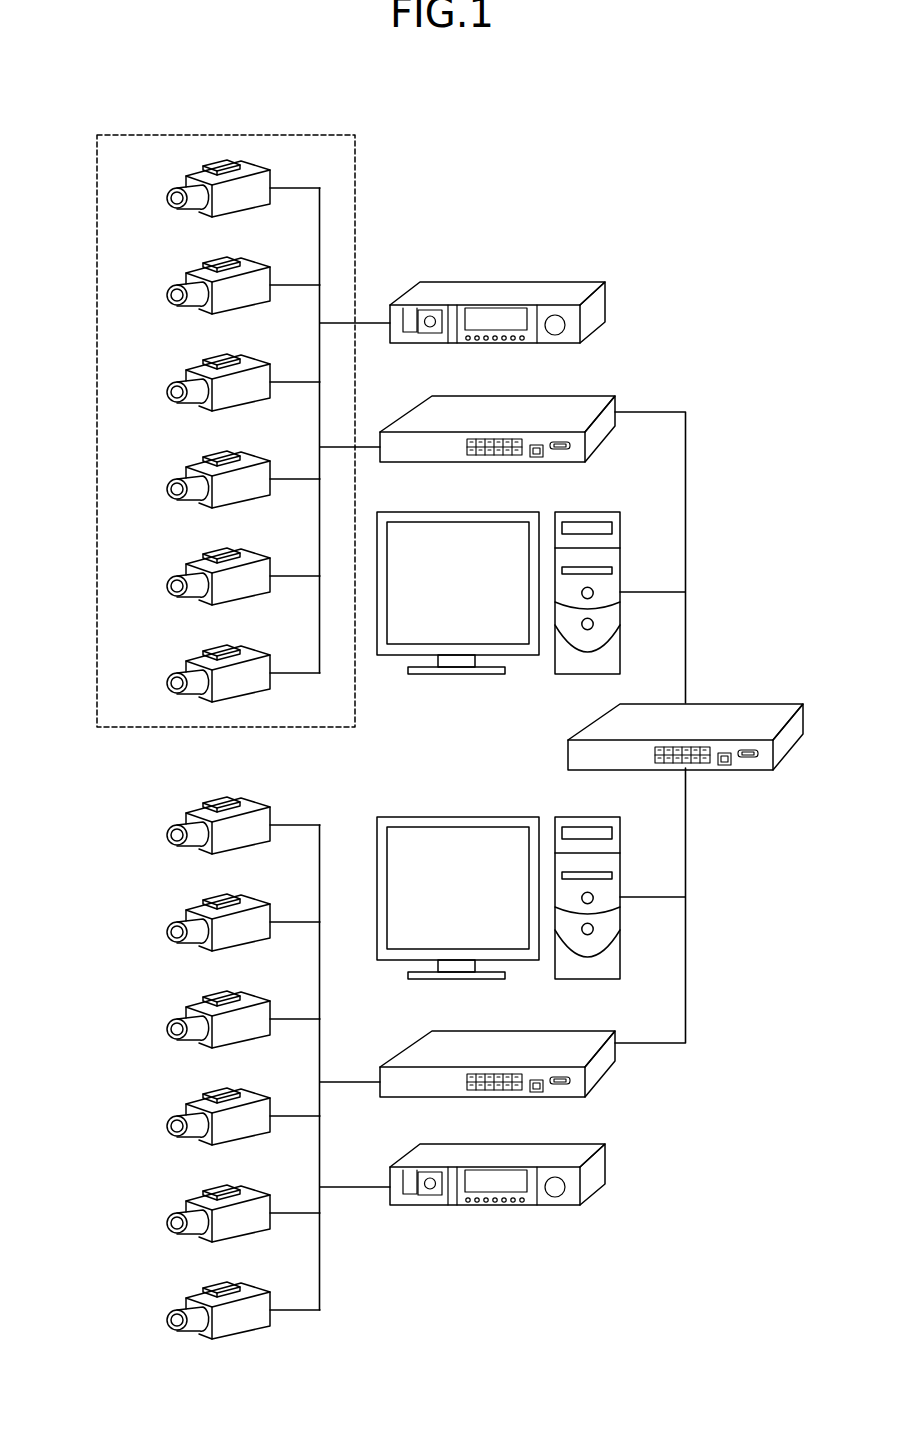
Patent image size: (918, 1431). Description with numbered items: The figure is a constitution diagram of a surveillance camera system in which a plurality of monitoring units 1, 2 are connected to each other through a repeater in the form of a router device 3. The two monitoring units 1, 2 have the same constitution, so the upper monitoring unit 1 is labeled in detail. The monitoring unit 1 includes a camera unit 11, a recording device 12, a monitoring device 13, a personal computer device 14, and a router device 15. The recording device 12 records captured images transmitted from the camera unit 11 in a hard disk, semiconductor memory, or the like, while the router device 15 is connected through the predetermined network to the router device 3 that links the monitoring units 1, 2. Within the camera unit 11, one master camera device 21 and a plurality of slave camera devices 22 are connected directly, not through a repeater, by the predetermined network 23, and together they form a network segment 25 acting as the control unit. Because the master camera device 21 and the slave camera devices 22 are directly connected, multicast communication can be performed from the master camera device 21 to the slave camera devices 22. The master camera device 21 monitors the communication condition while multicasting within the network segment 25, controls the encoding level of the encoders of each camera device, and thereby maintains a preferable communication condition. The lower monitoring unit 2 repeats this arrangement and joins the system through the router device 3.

The monitoring unit 1 is at (530, 228).
The monitoring unit 2 is at (663, 1126).
The router device 3 is at (750, 703).
The camera unit 11 is at (288, 119).
The recording device 12 is at (558, 270).
The monitoring device 13 is at (485, 511).
The personal computer device 14 is at (585, 511).
The router device 15 is at (563, 397).
The master camera device 21 is at (186, 177).
The slave camera devices 22 is at (186, 274).
The predetermined network 23 is at (318, 230).
The network segment 25 is at (356, 192).